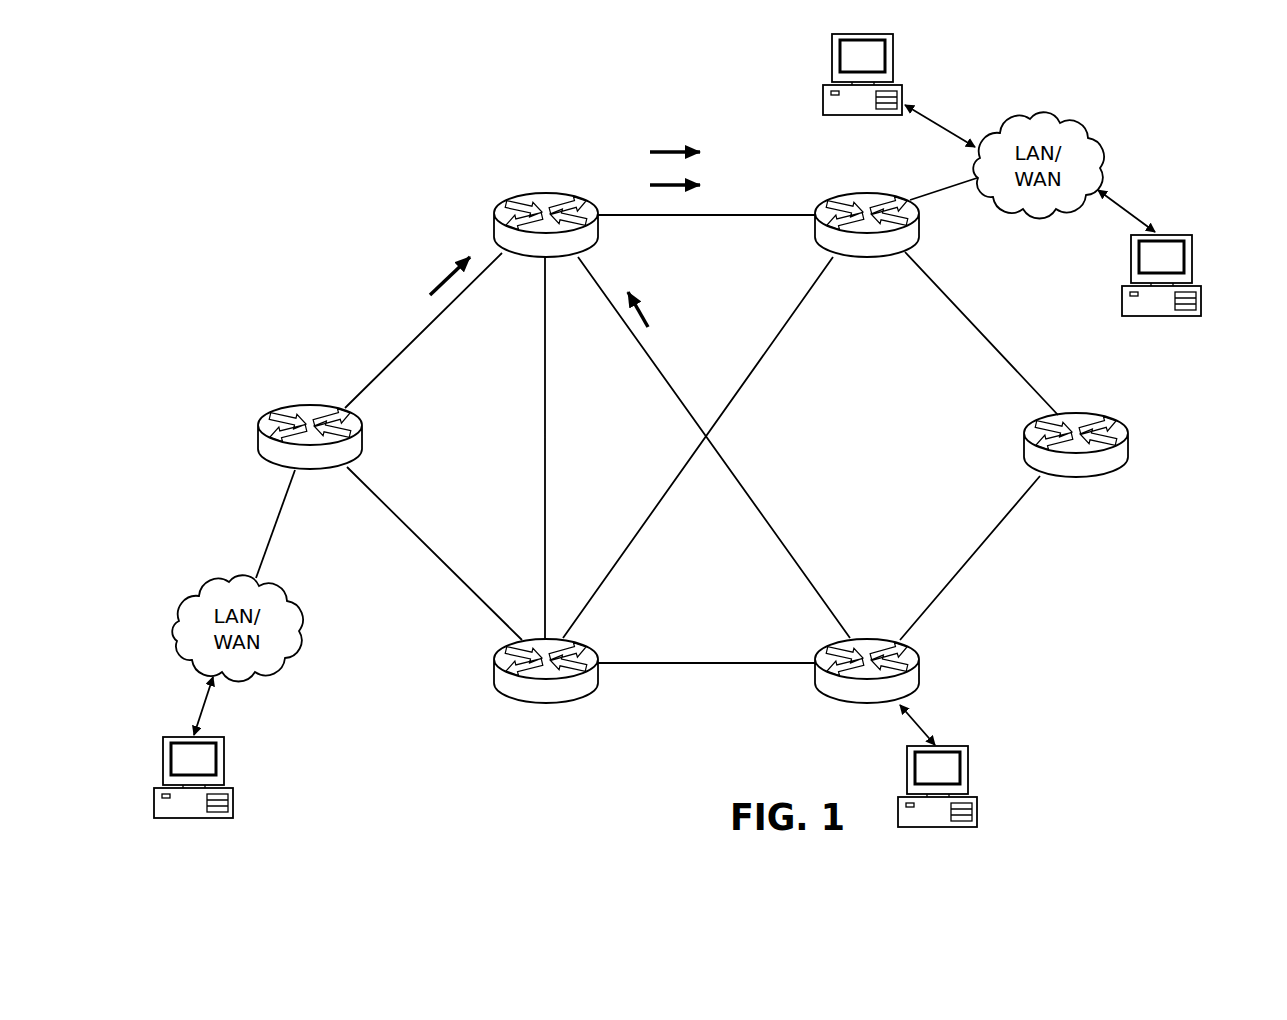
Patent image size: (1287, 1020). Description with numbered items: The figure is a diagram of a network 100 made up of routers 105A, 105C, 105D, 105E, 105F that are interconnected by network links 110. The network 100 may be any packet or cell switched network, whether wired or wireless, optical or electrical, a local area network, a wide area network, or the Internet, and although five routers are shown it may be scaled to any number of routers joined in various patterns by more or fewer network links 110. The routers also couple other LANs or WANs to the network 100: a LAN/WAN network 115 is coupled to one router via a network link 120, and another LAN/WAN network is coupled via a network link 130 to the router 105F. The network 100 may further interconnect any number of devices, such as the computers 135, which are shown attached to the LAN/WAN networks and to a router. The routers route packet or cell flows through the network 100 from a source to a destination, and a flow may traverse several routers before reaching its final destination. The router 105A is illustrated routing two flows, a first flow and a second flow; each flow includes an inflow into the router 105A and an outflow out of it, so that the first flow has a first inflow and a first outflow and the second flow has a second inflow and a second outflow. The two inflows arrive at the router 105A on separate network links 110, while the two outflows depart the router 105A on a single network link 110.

The network 100 is at (318, 148).
The router 105A is at (512, 198).
The router 105C is at (1105, 418).
The router 105D is at (845, 705).
The router 105E is at (588, 700).
The router 105F is at (835, 196).
The network link 110 is at (382, 372).
The network 115 is at (1042, 118).
The network link 120 is at (936, 193).
The network link 130 is at (272, 530).
The computer 135 is at (900, 70).